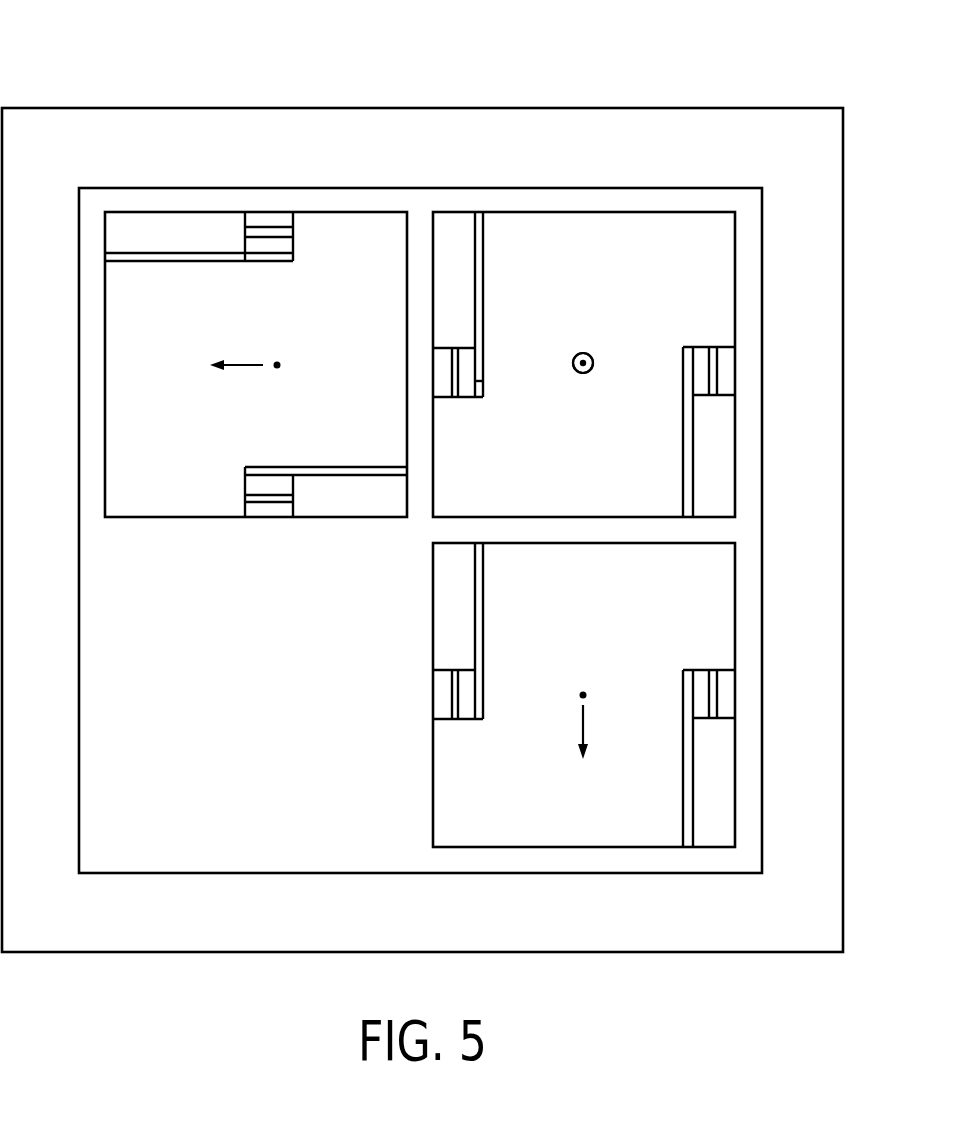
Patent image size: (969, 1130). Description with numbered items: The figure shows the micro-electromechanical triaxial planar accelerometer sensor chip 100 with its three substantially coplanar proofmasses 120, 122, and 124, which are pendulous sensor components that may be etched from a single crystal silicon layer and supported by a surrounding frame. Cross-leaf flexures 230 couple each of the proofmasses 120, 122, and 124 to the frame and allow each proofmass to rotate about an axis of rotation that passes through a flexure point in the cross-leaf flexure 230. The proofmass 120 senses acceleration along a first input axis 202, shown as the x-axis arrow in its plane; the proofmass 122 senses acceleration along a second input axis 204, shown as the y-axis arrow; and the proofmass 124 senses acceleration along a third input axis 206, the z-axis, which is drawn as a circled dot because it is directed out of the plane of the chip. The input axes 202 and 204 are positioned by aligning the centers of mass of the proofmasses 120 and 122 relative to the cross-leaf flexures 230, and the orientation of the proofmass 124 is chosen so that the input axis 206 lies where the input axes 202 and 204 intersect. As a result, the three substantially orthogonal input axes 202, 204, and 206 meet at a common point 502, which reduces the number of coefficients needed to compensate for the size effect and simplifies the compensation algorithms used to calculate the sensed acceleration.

The inertial sensor device 100 is at (68, 48).
The proofmass 120 is at (183, 481).
The proofmass 122 is at (670, 608).
The proofmass 124 is at (522, 483).
The cross-leaf flexure 230 is at (270, 183).
The first input axis 202 is at (252, 365).
The second input axis 204 is at (582, 723).
The third input axis 206 is at (595, 355).
The common point 502 is at (572, 362).